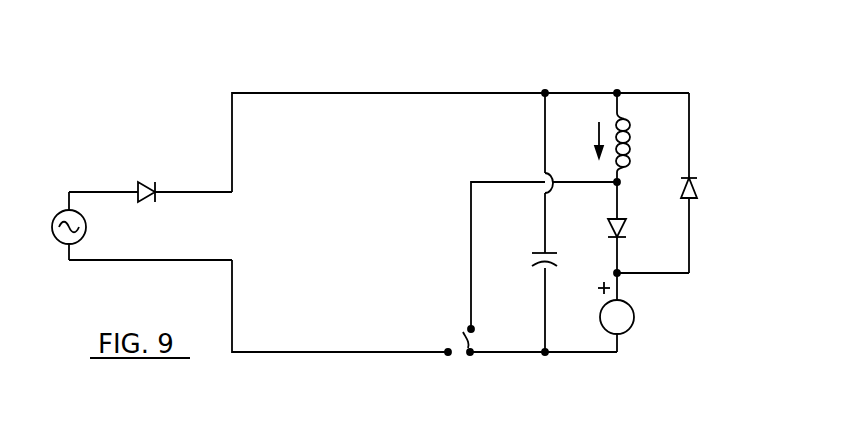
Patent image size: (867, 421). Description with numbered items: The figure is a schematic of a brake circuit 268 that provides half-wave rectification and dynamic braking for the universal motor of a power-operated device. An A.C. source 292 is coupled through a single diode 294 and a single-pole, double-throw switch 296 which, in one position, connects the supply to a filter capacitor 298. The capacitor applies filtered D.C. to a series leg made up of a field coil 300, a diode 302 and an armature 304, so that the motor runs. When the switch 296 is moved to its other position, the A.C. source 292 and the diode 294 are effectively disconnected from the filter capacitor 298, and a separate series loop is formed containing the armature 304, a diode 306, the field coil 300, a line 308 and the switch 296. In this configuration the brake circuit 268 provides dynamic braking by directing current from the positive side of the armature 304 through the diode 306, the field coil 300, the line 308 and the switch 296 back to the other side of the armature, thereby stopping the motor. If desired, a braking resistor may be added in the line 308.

The brake circuit 268 is at (636, 76).
The A.C. source 292 is at (58, 244).
The diode 294 is at (148, 180).
The single-pole, double-throw switch 296 is at (466, 348).
The filter capacitor 298 is at (543, 250).
The field coil 300 is at (628, 125).
The diode 302 is at (627, 226).
The armature 304 is at (634, 320).
The diode 306 is at (699, 190).
The line 308 is at (471, 211).